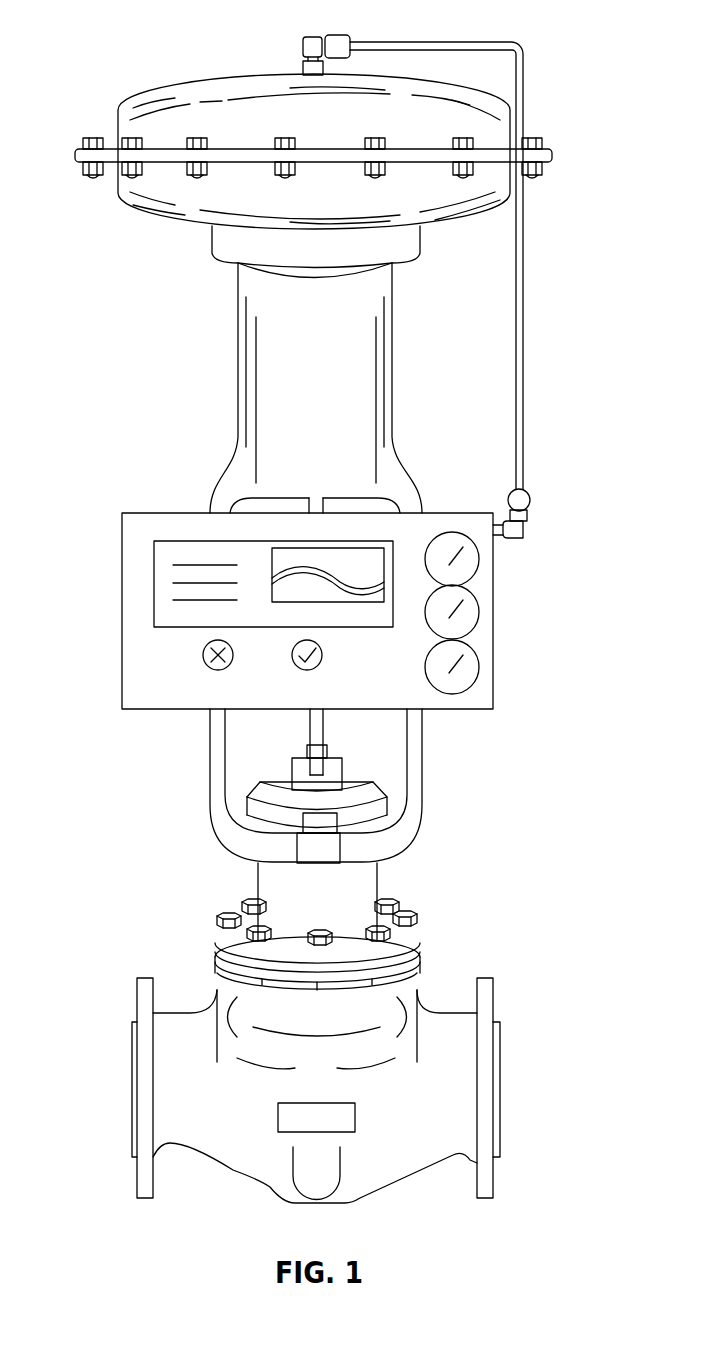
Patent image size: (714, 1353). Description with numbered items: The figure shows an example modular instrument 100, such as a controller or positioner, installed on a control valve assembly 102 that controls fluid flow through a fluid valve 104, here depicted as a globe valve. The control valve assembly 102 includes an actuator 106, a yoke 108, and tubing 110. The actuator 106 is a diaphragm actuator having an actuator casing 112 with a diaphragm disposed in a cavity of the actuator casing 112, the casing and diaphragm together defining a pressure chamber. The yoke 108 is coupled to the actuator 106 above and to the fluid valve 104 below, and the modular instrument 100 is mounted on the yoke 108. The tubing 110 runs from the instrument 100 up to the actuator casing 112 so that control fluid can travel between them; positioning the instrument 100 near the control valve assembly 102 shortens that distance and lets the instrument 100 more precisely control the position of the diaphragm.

The instrument 100 is at (494, 640).
The control valve assembly 102 is at (118, 52).
The fluid valve 104 is at (146, 978).
The actuator 106 is at (135, 265).
The yoke 108 is at (210, 742).
The tubing 110 is at (524, 358).
The actuator casing 112 is at (126, 205).